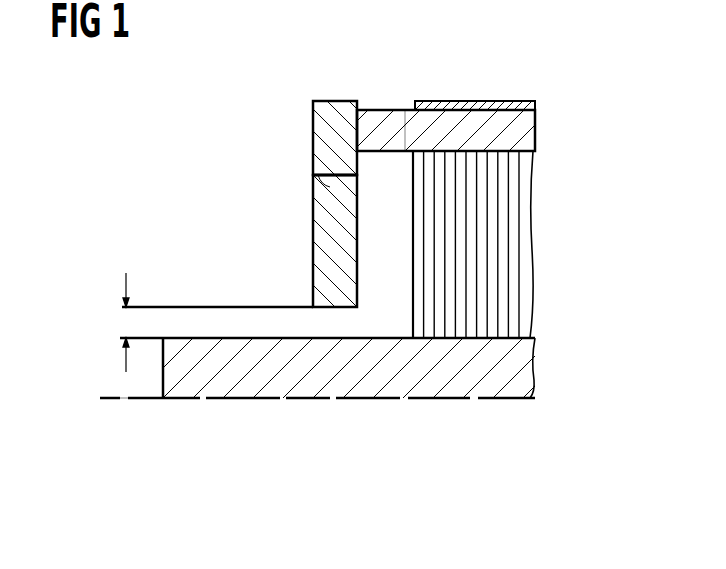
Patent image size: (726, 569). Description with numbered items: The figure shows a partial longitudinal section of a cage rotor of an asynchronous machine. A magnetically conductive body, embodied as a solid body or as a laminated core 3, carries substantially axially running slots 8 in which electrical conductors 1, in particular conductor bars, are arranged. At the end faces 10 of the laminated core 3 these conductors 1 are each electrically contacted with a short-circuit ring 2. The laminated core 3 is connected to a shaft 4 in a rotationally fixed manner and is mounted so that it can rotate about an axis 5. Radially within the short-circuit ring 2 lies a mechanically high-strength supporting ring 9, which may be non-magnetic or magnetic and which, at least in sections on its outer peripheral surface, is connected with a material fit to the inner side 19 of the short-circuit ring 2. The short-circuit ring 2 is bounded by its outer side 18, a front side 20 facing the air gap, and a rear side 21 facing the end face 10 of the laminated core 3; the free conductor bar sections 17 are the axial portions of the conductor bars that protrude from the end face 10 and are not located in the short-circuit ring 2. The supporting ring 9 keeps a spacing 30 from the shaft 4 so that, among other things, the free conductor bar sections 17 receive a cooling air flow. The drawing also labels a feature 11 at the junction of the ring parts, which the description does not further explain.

The electrical conductors 1 is at (535, 128).
The short-circuit ring 2 is at (313, 128).
The laminated core 3 is at (530, 190).
The shaft 4 is at (228, 398).
The axis 5 is at (118, 398).
The slots 8 is at (496, 100).
The supporting ring 9 is at (318, 226).
The end faces 10 is at (414, 158).
The separating layer 11 is at (313, 188).
The free conductor bar sections 17 is at (383, 111).
The outer side 18 is at (333, 100).
The inner side 19 is at (347, 177).
The front side 20 is at (312, 148).
The rear side 21 is at (373, 150).
The spacing 30 is at (128, 322).